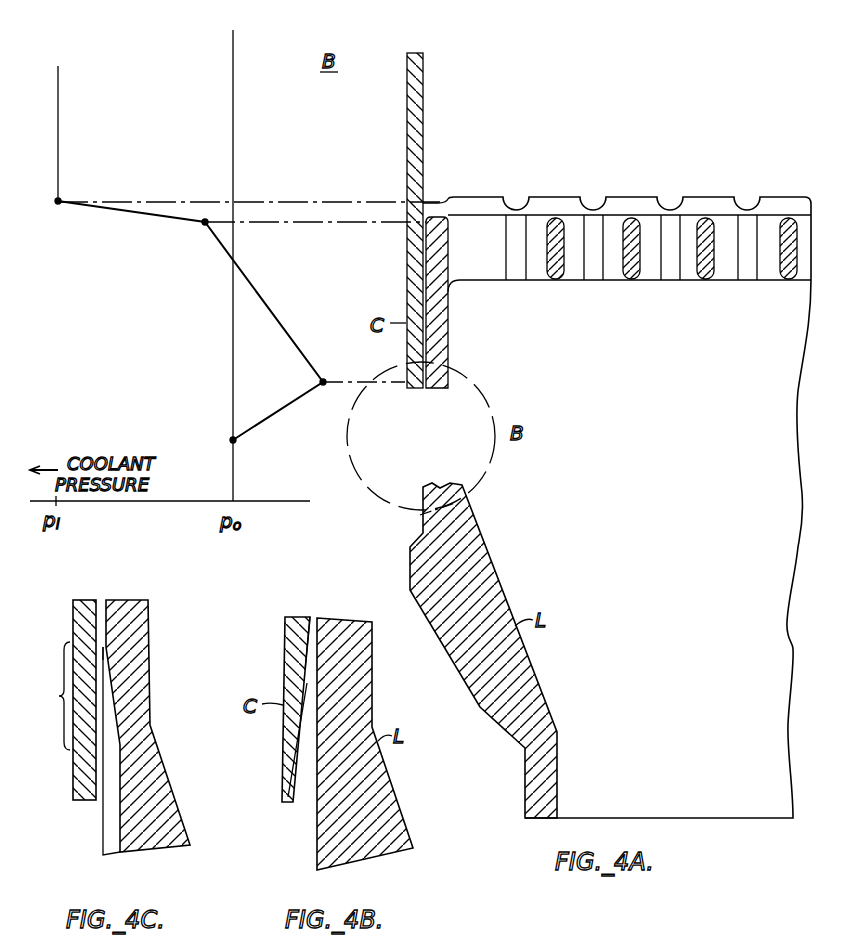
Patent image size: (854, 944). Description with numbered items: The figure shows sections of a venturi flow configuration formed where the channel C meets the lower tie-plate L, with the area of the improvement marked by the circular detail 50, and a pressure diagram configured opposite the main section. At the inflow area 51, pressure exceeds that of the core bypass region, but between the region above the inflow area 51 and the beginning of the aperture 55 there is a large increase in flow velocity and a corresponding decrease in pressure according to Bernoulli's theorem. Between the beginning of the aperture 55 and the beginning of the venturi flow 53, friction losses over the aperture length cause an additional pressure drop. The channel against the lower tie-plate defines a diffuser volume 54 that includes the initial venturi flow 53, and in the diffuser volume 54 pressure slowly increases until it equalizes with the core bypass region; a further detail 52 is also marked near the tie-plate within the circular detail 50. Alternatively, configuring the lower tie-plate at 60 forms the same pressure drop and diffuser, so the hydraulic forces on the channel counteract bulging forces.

In FIG. 4A, the circular detail 50 is at (482, 392).
In FIG. 4A, the inflow area 51 is at (432, 202).
In FIG. 4A, the gap 52 is at (428, 512).
In FIG. 4A, the venturi flow 53 is at (325, 381).
In FIG. 4C, the venturi flow 53 is at (100, 634).
In FIG. 4B, the venturi flow 53 is at (312, 677).
In FIG. 4A, the diffuser volume 54 is at (234, 441).
In FIG. 4C, the diffuser volume 54 is at (50, 696).
In FIG. 4B, the diffuser volume 54 is at (292, 753).
In FIG. 4A, the aperture 55 is at (425, 228).
In FIG. 4C, the lower tie-plate configuration 60 is at (85, 763).